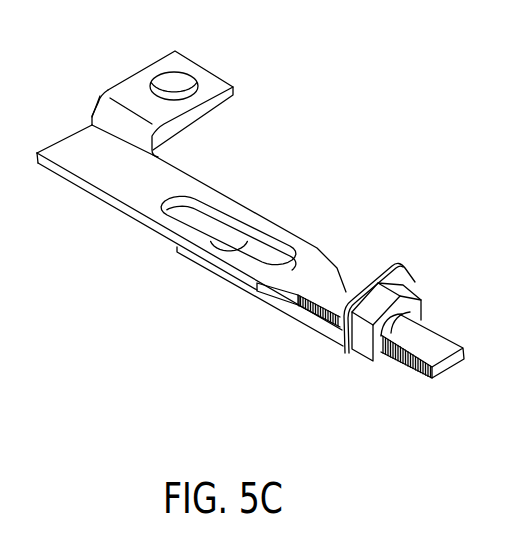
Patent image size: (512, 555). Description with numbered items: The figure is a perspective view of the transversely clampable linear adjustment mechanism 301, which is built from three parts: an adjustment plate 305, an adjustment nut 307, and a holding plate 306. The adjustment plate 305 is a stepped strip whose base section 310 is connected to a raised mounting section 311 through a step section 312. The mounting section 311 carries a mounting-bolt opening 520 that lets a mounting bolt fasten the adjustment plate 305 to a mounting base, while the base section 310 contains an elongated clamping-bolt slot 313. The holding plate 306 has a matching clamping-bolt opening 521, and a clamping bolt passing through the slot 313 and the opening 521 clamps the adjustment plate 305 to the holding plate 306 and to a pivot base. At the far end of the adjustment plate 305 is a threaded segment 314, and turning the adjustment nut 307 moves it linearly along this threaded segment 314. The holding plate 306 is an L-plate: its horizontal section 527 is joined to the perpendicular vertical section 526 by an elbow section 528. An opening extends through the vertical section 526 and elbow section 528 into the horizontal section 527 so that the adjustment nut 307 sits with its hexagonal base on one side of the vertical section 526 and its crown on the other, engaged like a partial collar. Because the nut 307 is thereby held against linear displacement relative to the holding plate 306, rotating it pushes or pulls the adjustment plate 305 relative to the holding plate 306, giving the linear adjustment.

The transversely clampable linear adjustment mechanism 301 is at (233, 450).
The adjustment plate 305 is at (178, 160).
The holding plate 306 is at (308, 340).
The adjustment nut 307 is at (418, 306).
The base section 310 is at (123, 183).
The mounting section 311 is at (122, 91).
The step section 312 is at (101, 112).
The clamping-bolt slot 313 is at (180, 213).
The threaded segment 314 is at (423, 345).
The mounting-bolt opening 520 is at (177, 90).
The clamping-bolt opening 521 is at (237, 240).
The vertical section 526 is at (400, 278).
The horizontal section 527 is at (297, 306).
The elbow section 528 is at (340, 345).